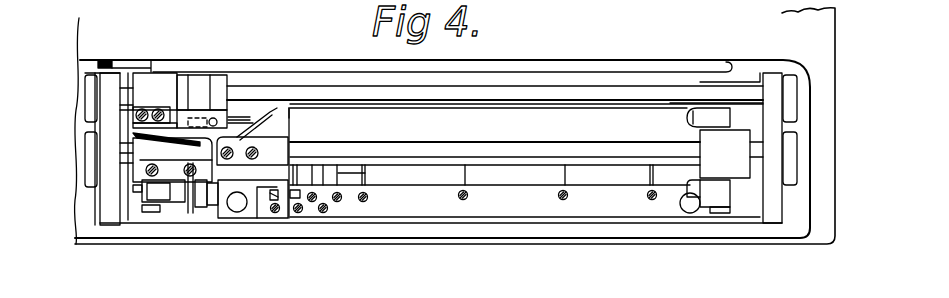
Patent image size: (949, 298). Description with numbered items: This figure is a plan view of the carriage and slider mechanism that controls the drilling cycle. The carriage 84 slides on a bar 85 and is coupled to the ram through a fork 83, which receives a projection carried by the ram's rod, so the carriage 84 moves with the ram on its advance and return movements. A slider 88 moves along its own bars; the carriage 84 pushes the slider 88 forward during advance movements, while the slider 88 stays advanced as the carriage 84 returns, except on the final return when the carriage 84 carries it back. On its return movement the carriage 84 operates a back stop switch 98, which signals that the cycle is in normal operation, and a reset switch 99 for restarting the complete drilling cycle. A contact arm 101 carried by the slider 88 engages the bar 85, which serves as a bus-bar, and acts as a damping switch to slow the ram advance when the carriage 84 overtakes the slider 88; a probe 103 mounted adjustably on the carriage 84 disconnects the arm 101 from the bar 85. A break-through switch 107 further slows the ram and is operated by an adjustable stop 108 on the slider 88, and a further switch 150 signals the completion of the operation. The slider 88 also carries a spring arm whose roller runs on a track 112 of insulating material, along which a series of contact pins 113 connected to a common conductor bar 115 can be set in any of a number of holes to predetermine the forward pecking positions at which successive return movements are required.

The fork 83 is at (185, 78).
The carriage 84 is at (143, 83).
The bar 85 is at (575, 98).
The slider 88 is at (290, 117).
The back stop switch 98 is at (160, 142).
The reset switch 99 is at (159, 196).
The contact arm 101 is at (252, 123).
The probe 103 is at (235, 120).
The break-through switch 107 is at (717, 188).
The adjustable stop 108 is at (276, 211).
The track 112 is at (442, 151).
The contact pins 113 is at (365, 173).
The common conductor bar 115 is at (473, 201).
The further switch 150 is at (710, 115).